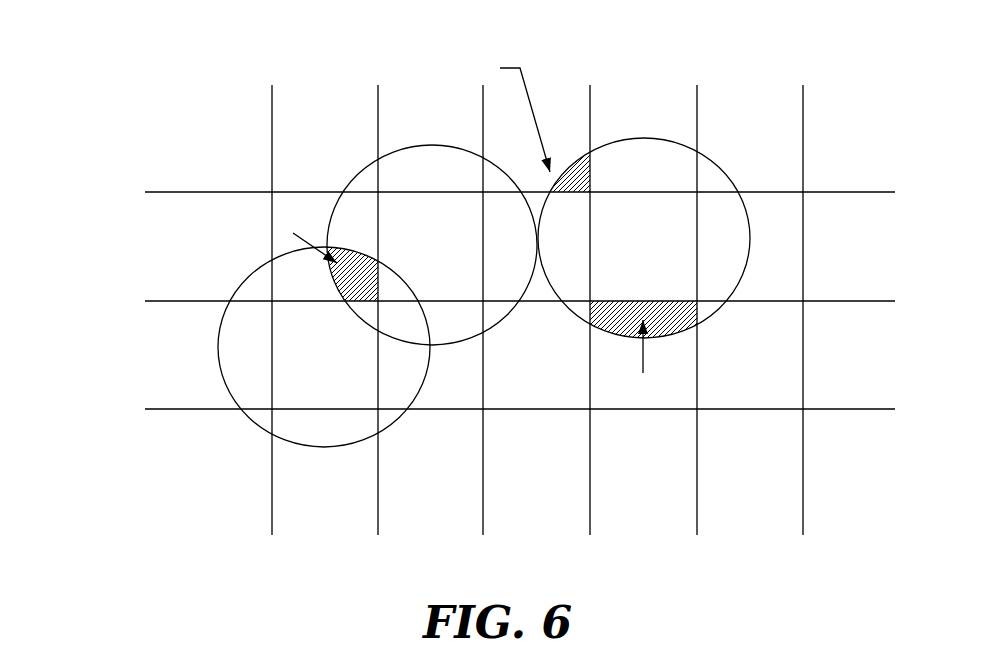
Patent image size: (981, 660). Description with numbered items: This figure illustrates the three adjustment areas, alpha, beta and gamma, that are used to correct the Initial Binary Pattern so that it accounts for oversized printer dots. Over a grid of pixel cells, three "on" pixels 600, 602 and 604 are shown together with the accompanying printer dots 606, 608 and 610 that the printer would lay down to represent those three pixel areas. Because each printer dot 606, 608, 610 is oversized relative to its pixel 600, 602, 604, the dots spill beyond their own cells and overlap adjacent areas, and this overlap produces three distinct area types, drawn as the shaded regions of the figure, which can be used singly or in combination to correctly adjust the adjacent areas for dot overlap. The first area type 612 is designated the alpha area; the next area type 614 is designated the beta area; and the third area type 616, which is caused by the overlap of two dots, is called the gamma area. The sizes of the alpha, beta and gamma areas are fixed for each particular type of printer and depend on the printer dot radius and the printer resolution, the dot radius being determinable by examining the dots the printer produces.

The on pixel 600 is at (719, 187).
The on pixel 602 is at (430, 263).
The on pixel 604 is at (325, 353).
The printer dot 606 is at (715, 230).
The printer dot 608 is at (408, 190).
The printer dot 610 is at (239, 414).
The alpha area 612 is at (683, 325).
The beta area 614 is at (568, 170).
The gamma area 616 is at (335, 255).